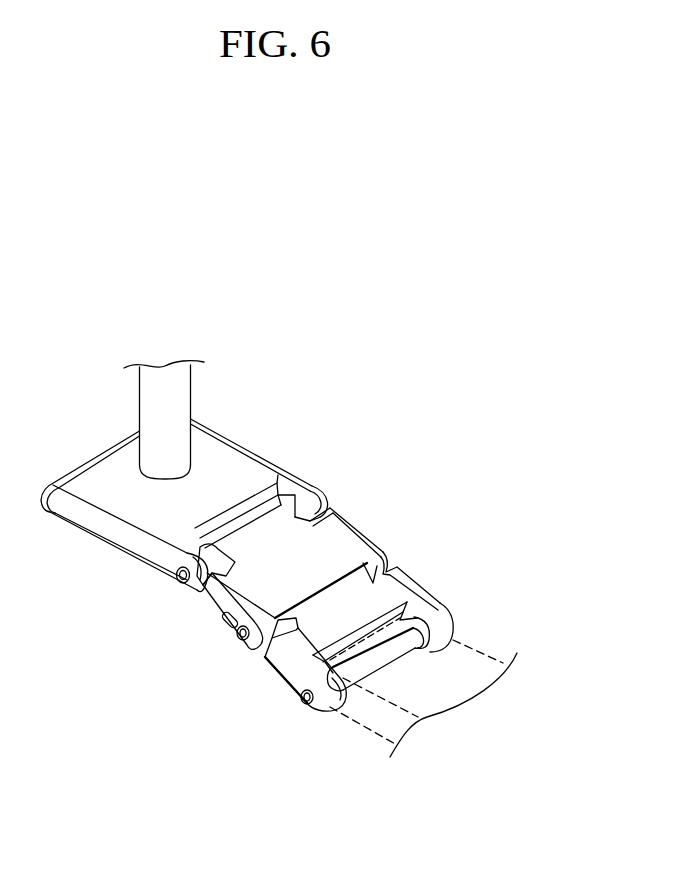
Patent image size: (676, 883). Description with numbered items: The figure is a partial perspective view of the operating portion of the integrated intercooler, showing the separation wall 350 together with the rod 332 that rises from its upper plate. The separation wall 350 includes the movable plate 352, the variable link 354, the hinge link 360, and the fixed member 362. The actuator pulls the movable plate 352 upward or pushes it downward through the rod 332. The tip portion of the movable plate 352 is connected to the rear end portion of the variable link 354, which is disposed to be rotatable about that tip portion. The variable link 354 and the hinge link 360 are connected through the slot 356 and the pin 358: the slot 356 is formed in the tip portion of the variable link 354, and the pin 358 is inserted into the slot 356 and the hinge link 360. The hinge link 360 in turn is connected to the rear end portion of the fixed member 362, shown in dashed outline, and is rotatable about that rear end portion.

The rod 332 is at (180, 388).
The separation wall 350 is at (230, 750).
The movable plate 352 is at (103, 530).
The variable link 354 is at (208, 603).
The slot 356 is at (230, 627).
The pin 358 is at (242, 641).
The hinge link 360 is at (293, 687).
The fixed member 362 is at (366, 730).